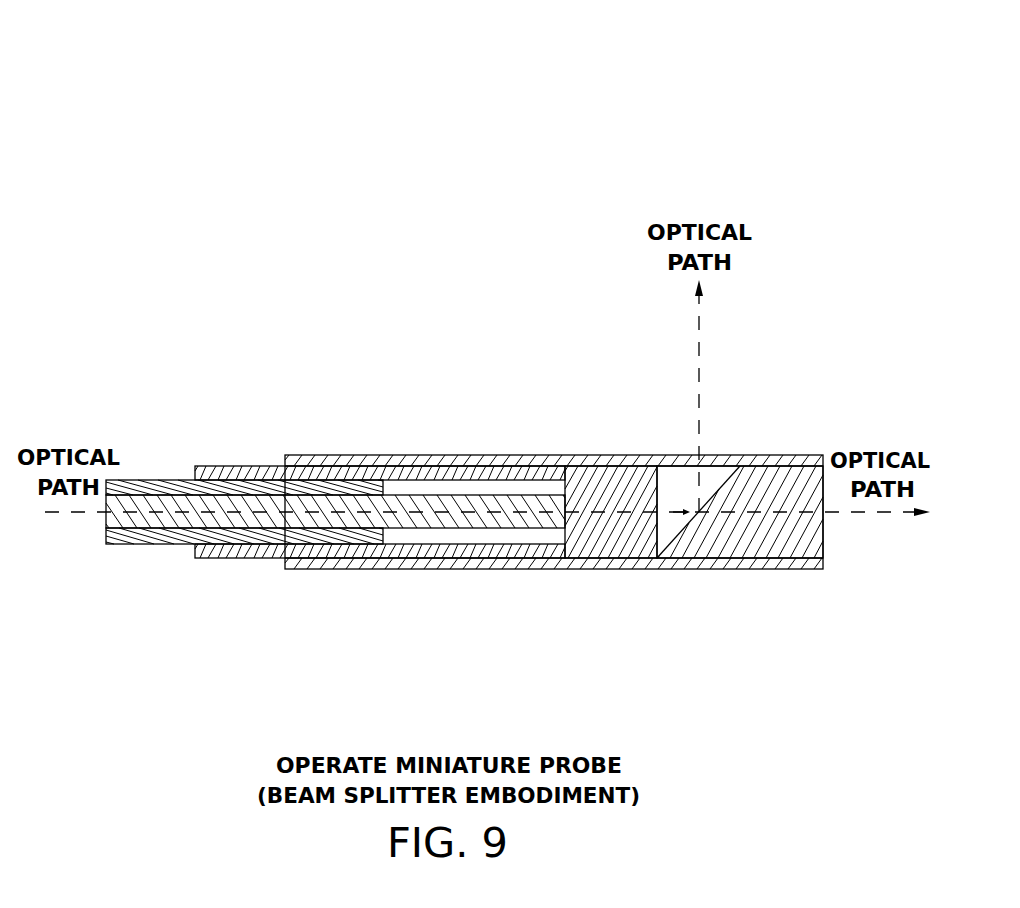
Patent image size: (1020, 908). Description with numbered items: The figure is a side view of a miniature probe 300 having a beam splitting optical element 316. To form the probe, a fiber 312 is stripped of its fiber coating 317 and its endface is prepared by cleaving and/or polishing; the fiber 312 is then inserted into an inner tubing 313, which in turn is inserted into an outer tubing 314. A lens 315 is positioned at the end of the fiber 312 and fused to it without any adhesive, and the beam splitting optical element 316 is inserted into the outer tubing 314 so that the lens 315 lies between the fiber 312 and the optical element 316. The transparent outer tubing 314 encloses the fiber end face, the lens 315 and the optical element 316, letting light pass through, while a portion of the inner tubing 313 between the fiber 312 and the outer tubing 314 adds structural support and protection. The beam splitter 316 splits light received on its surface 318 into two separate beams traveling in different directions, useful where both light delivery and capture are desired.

The miniature probe 300 is at (182, 196).
The fiber 312 is at (237, 512).
The inner tubing 313 is at (410, 466).
The outer tubing 314 is at (470, 562).
The lens 315 is at (600, 466).
The beam splitting optical element 316 is at (762, 540).
The fiber coating 317 is at (158, 480).
The surface 318 is at (711, 490).